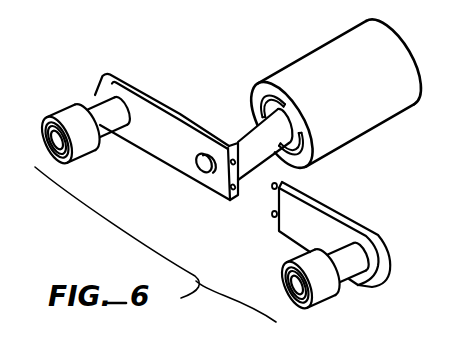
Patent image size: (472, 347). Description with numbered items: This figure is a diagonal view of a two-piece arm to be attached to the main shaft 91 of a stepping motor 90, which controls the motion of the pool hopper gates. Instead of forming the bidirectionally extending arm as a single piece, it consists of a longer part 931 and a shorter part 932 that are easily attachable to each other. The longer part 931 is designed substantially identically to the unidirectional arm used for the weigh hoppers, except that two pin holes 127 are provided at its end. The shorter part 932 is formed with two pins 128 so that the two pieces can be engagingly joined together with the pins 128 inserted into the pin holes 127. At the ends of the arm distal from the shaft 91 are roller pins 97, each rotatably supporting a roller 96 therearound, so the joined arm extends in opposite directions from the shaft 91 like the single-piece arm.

The stepping motor 90 is at (329, 57).
The main shaft 91 is at (249, 124).
The longer part 931 is at (155, 141).
The shorter part 932 is at (324, 206).
The pin holes 127 is at (236, 199).
The pins 128 is at (274, 217).
The roller 96 is at (80, 108).
The roller pins 97 is at (345, 267).